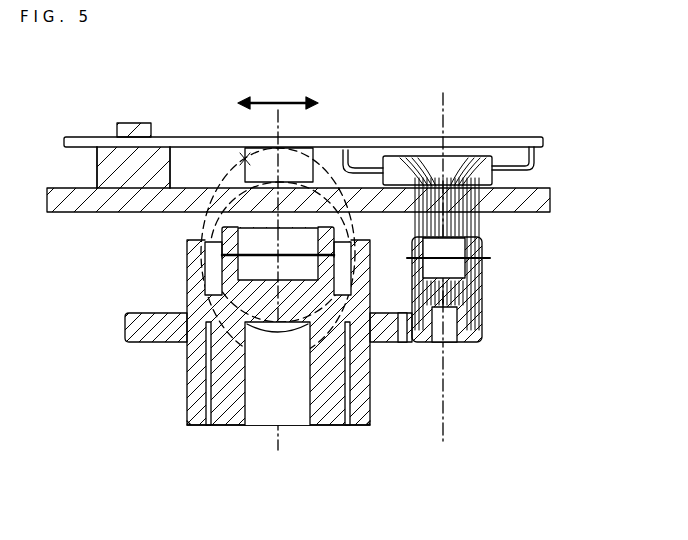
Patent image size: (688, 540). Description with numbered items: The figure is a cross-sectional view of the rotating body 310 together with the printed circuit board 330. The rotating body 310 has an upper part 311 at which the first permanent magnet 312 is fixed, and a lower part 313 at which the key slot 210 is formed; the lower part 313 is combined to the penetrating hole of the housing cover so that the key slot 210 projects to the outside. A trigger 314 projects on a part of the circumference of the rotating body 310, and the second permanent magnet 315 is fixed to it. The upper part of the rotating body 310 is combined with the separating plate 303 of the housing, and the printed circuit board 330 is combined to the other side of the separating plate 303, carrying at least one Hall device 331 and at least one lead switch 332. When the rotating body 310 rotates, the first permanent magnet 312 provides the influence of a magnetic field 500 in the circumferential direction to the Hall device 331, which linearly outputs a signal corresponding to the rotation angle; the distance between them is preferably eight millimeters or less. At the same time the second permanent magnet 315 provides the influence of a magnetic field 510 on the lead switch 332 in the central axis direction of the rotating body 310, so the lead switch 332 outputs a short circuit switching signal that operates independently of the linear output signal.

The printed circuit board 330 is at (80, 140).
The Hall device 331 is at (245, 152).
The lead switch 332 is at (482, 164).
The magnetic field 510 is at (420, 170).
The separating plate 303 is at (78, 203).
The magnetic field 500 is at (207, 215).
The upper part 311 is at (186, 295).
The first permanent magnet 312 is at (168, 338).
The lower part 313 is at (194, 425).
The key slot 210 is at (260, 410).
The rotating body 310 is at (296, 370).
The trigger 314 is at (473, 342).
The second permanent magnet 315 is at (481, 298).